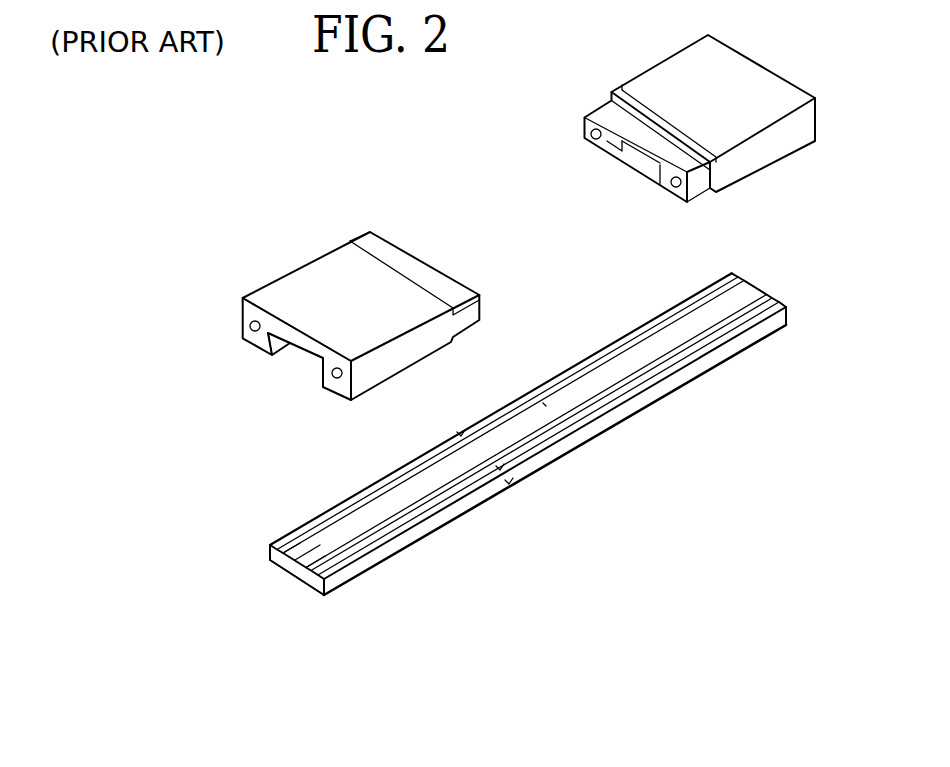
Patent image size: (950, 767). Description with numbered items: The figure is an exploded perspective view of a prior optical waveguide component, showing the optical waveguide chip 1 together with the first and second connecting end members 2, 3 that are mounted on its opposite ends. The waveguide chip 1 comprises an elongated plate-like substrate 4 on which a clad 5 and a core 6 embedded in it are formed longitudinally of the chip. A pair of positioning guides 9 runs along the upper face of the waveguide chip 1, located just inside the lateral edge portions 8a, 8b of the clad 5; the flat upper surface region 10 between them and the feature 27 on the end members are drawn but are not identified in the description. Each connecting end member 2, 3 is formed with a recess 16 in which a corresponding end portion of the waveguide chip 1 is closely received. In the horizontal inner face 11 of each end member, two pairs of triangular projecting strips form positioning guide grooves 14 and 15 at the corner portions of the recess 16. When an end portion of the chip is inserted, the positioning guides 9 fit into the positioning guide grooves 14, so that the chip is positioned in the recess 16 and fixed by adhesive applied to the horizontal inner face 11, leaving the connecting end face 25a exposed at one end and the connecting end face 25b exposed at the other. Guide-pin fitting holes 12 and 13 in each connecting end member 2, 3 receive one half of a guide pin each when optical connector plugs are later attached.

The optical waveguide chip 1 is at (598, 466).
The connecting end member 2 is at (343, 257).
The connecting end member 3 is at (750, 75).
The substrate 4 is at (310, 597).
The clad 5 is at (705, 372).
The core 6 is at (545, 404).
The lateral edge portion 8a is at (430, 540).
The lateral edge portion 8b is at (309, 521).
The positioning guide 9 is at (460, 434).
The rail top surface 10 is at (345, 542).
The horizontal inner face 11 is at (297, 330).
The guide-pin fitting hole 12 is at (335, 398).
The guide-pin fitting hole 13 is at (250, 326).
The positioning guide groove 14 is at (267, 341).
The positioning guide groove 15 is at (607, 145).
The recess 16 is at (290, 355).
The connecting end face 25a is at (292, 588).
The connecting end face 25b is at (758, 283).
The groove 27 is at (420, 282).